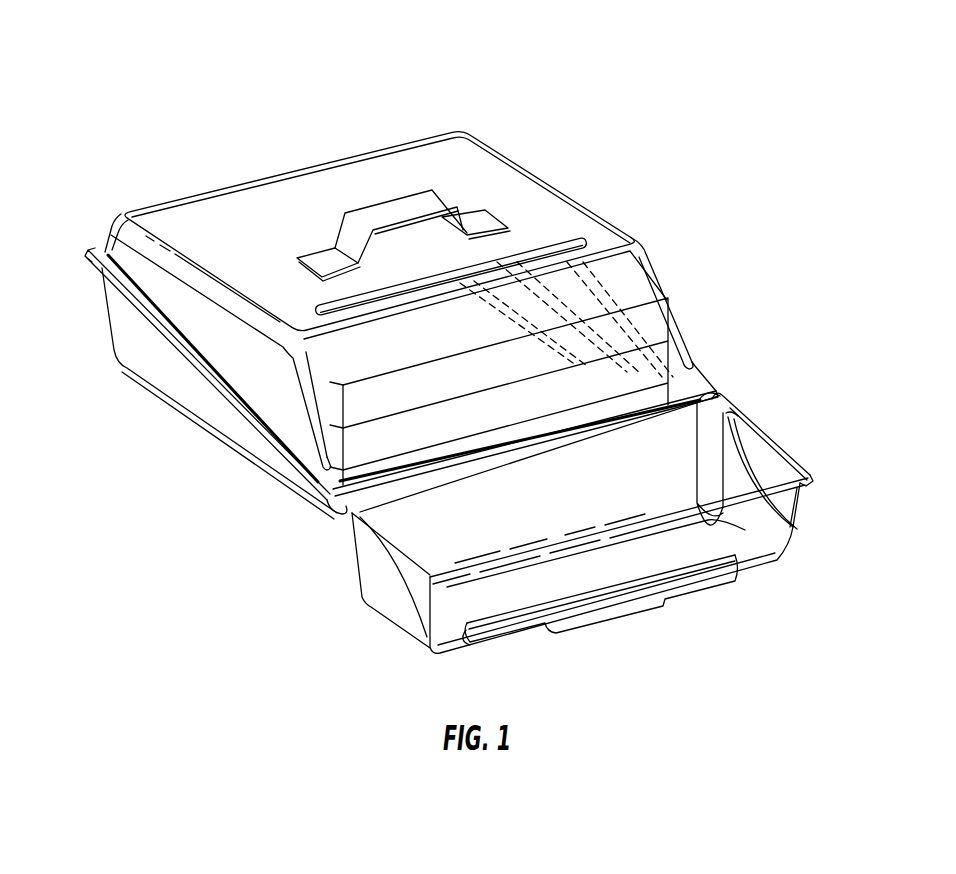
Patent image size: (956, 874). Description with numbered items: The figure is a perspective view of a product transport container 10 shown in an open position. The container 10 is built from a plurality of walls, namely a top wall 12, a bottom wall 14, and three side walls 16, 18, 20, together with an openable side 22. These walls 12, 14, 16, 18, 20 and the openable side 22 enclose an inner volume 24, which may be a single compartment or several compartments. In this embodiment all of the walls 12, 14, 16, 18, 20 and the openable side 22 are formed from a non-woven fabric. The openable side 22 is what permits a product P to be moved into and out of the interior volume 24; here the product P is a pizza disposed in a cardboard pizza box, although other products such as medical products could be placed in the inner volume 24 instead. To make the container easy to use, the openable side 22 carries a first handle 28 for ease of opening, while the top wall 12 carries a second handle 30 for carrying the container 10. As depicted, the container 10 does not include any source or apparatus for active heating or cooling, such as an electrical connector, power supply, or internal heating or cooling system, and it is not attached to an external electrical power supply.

The product transport container 10 is at (240, 122).
The top wall 12 is at (533, 176).
The bottom wall 14 is at (289, 500).
The side wall 16 is at (143, 359).
The side wall 18 is at (115, 209).
The side wall 20 is at (685, 263).
The openable side 22 is at (357, 608).
The inner volume 24 is at (642, 261).
The first handle 28 is at (612, 621).
The second handle 30 is at (401, 196).
The product P is at (657, 331).